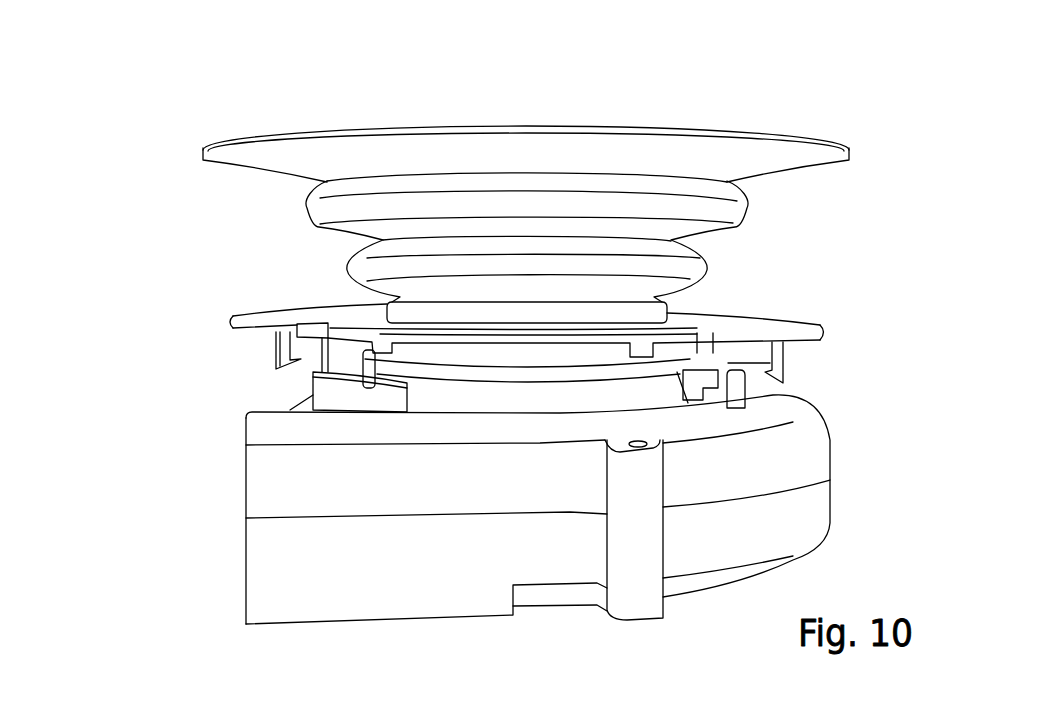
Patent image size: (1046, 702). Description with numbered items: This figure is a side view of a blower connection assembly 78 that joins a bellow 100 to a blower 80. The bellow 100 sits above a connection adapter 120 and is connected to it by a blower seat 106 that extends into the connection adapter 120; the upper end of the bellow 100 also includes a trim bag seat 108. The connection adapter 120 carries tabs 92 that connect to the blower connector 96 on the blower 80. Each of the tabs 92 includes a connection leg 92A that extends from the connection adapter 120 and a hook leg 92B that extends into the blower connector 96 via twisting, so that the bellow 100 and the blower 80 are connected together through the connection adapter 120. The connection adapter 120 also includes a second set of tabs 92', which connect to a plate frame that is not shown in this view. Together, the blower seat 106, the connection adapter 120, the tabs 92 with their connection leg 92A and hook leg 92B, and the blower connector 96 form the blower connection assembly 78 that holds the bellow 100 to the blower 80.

The blower connection assembly 78 is at (284, 70).
The blower 80 is at (838, 538).
The tabs 92 is at (590, 381).
The second set of tabs 92' is at (213, 401).
The connection leg 92A is at (783, 368).
The hook leg 92B is at (703, 392).
The blower connector 96 is at (385, 398).
The bellow 100 is at (235, 137).
The blower seat 106 is at (550, 380).
The trim bag seat 108 is at (800, 135).
The connection adapter 120 is at (230, 320).